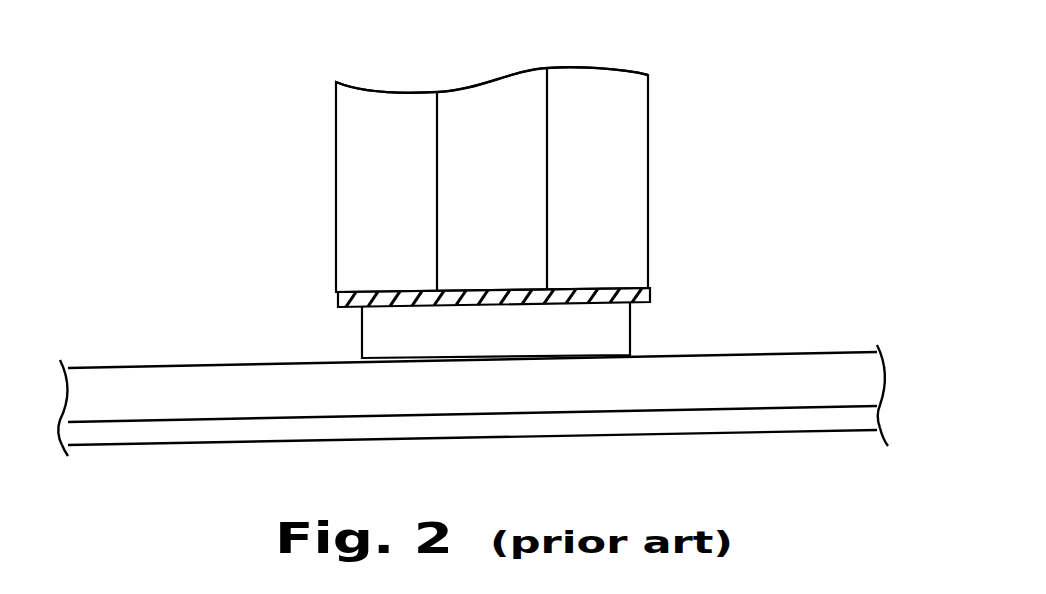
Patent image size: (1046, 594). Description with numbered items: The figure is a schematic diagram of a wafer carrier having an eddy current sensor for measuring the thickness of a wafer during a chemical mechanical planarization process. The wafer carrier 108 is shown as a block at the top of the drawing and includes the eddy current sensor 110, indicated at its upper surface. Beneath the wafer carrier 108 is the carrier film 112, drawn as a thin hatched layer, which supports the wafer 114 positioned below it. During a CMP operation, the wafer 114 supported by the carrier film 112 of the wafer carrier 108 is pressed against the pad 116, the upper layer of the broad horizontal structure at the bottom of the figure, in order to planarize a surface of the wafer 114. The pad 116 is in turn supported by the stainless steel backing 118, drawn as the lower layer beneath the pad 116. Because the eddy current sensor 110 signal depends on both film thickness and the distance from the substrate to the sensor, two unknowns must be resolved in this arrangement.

The wafer carrier 108 is at (648, 190).
The eddy current sensor 110 is at (492, 84).
The carrier film 112 is at (650, 295).
The wafer 114 is at (630, 328).
The pad 116 is at (882, 378).
The stainless steel backing 118 is at (878, 415).